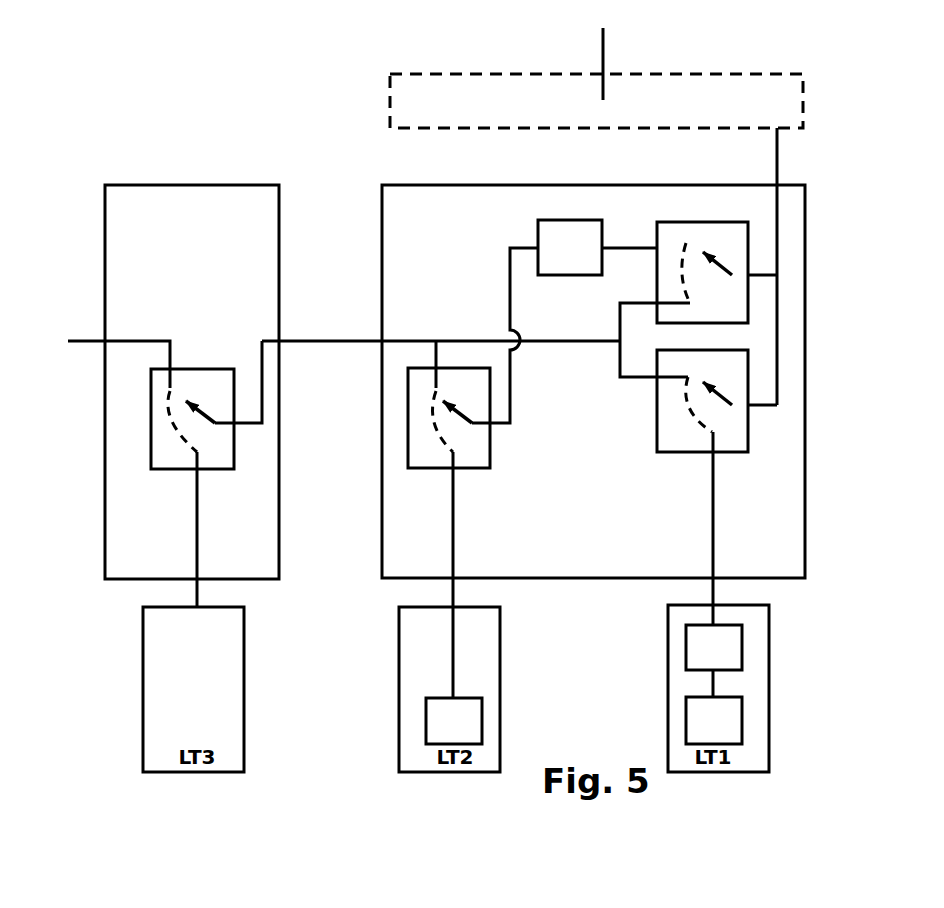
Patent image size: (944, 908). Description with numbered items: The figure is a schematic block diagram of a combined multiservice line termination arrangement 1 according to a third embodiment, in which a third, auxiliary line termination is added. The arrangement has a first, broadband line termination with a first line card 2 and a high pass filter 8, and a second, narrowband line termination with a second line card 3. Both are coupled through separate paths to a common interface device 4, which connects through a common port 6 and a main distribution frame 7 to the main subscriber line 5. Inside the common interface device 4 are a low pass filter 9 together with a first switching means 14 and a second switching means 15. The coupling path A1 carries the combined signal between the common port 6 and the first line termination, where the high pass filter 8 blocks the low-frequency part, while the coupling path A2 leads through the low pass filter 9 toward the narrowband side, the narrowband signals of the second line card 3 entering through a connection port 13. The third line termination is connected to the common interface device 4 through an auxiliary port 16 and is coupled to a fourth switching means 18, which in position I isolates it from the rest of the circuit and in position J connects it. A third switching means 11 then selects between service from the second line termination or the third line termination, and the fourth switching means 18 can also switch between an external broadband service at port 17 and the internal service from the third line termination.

The combined multiservice line termination arrangement 1 is at (843, 517).
The first line card 2 is at (714, 720).
The second line card 3 is at (454, 721).
The common interface device 4 is at (807, 401).
The main subscriber line 5 is at (614, 63).
The common port 6 is at (781, 172).
The main distribution frame 7 is at (596, 101).
The high pass filter 8 is at (714, 661).
The low pass filter 9 is at (564, 321).
The third switching means 11 is at (492, 463).
The connection port 13 is at (445, 591).
The first switching means 14 is at (654, 270).
The second switching means 15 is at (654, 403).
The auxiliary port 16 is at (351, 337).
The port 17 is at (95, 359).
The fourth switching means 18 is at (236, 454).
The coupling path A1 is at (709, 491).
The coupling path A2 is at (639, 241).